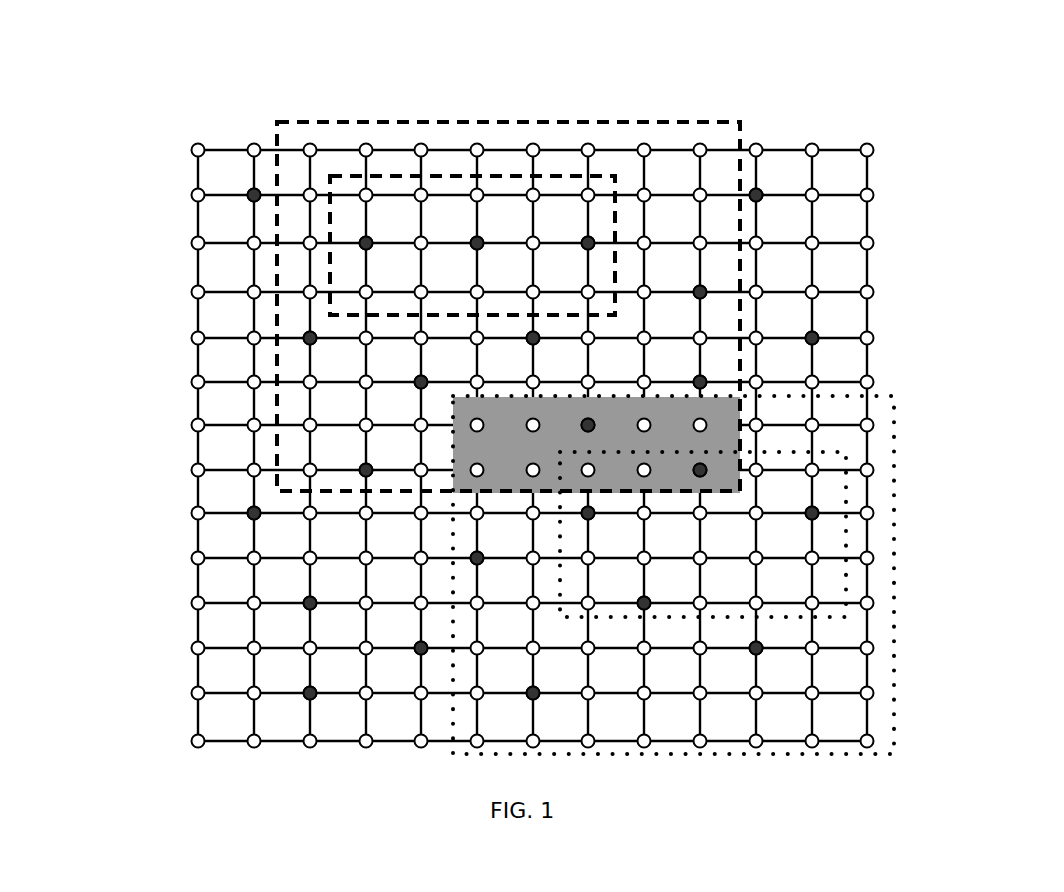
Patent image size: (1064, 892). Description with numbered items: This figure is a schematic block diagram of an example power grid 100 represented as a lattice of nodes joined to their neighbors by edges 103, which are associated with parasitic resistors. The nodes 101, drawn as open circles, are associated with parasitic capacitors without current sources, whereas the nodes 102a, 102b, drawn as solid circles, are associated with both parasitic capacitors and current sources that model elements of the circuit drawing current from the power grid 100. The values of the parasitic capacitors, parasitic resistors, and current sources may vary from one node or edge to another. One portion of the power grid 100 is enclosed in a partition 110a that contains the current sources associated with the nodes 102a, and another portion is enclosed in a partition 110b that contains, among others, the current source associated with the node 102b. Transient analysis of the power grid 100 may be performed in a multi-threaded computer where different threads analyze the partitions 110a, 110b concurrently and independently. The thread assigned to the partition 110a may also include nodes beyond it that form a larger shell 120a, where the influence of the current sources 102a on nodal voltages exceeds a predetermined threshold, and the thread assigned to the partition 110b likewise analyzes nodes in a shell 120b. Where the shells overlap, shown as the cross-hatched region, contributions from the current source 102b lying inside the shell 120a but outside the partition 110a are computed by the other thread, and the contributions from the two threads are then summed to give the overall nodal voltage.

The power grid 100 is at (540, 396).
The nodes 101 is at (302, 185).
The nodes 102a is at (373, 232).
The node 102b is at (656, 602).
The edges 103 is at (806, 172).
The partition 110a is at (606, 173).
The partition 110b is at (851, 578).
The shell 120a is at (742, 260).
The shell 120b is at (898, 426).